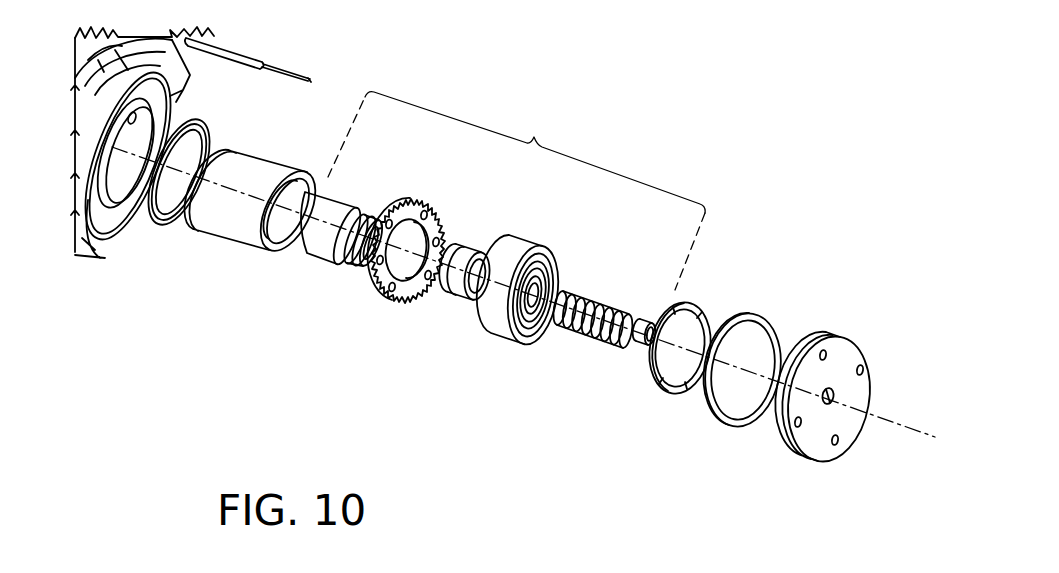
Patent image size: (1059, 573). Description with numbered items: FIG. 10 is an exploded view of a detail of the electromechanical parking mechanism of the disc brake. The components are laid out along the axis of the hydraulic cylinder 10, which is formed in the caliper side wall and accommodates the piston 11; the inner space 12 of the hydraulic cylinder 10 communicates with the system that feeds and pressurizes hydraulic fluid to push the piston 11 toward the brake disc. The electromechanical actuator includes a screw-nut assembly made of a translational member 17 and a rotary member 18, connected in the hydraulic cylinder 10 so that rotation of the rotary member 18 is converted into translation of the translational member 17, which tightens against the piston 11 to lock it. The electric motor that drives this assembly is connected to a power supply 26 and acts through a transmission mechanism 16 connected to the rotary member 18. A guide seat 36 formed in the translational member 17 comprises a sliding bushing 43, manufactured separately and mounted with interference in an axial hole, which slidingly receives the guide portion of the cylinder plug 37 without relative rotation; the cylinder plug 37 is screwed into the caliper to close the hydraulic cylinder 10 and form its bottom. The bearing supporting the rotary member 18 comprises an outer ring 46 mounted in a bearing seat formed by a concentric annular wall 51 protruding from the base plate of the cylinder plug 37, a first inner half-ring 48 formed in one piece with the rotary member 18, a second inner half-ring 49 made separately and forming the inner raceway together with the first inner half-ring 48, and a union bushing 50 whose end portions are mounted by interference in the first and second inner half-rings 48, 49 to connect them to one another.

The hydraulic cylinder 10 is at (120, 172).
The piston 11 is at (254, 243).
The inner space 12 is at (124, 198).
The transmission mechanism 16 is at (516, 191).
The translational member 17 is at (607, 297).
The rotary member 18 is at (327, 252).
The power supply 26 is at (288, 68).
The guide seat 36 is at (629, 341).
The cylinder plug 37 is at (842, 420).
The sliding bushing 43 is at (638, 346).
The outer ring 46 is at (519, 331).
The first inner half-ring 48 is at (382, 210).
The second inner half-ring 49 is at (527, 330).
The union bushing 50 is at (453, 284).
The annular wall 51 is at (802, 345).